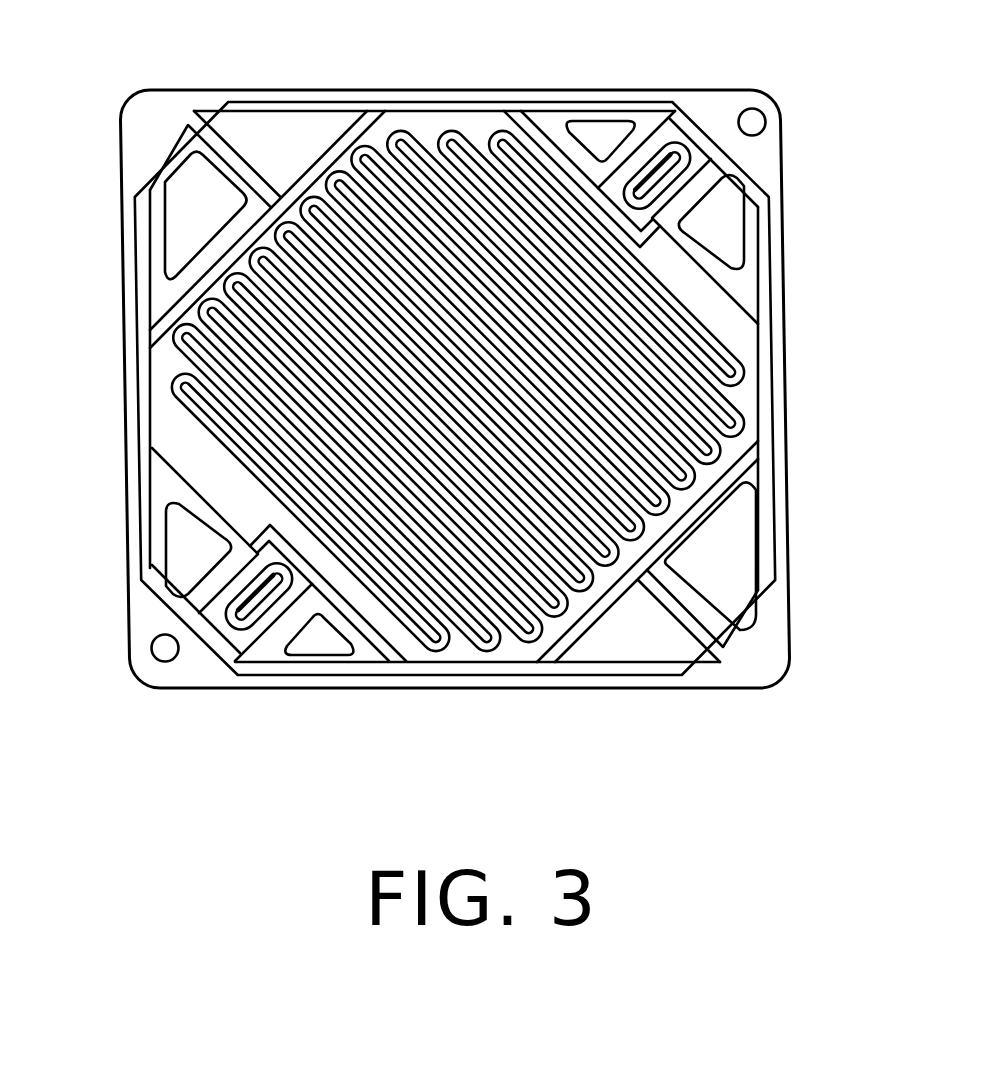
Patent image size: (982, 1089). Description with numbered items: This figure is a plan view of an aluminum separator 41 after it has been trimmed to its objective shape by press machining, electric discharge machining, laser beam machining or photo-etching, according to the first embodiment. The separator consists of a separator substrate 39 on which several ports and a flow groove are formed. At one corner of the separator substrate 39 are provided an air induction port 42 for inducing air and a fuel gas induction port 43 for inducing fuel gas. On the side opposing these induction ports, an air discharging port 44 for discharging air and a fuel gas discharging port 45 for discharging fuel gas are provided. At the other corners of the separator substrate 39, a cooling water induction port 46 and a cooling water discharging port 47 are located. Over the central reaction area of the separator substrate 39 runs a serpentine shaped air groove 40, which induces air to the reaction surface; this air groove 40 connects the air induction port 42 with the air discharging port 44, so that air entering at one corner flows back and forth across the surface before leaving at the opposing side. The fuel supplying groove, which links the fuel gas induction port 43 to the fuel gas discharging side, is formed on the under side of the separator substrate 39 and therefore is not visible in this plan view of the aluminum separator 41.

The separator substrate 39 is at (762, 152).
The air groove 40 is at (700, 412).
The aluminum separator 41 is at (328, 38).
The air induction port 42 is at (724, 248).
The fuel gas induction port 43 is at (609, 131).
The air discharging port 44 is at (194, 549).
The fuel gas discharging port 45 is at (313, 640).
The cooling water induction port 46 is at (740, 583).
The cooling water discharging port 47 is at (177, 221).